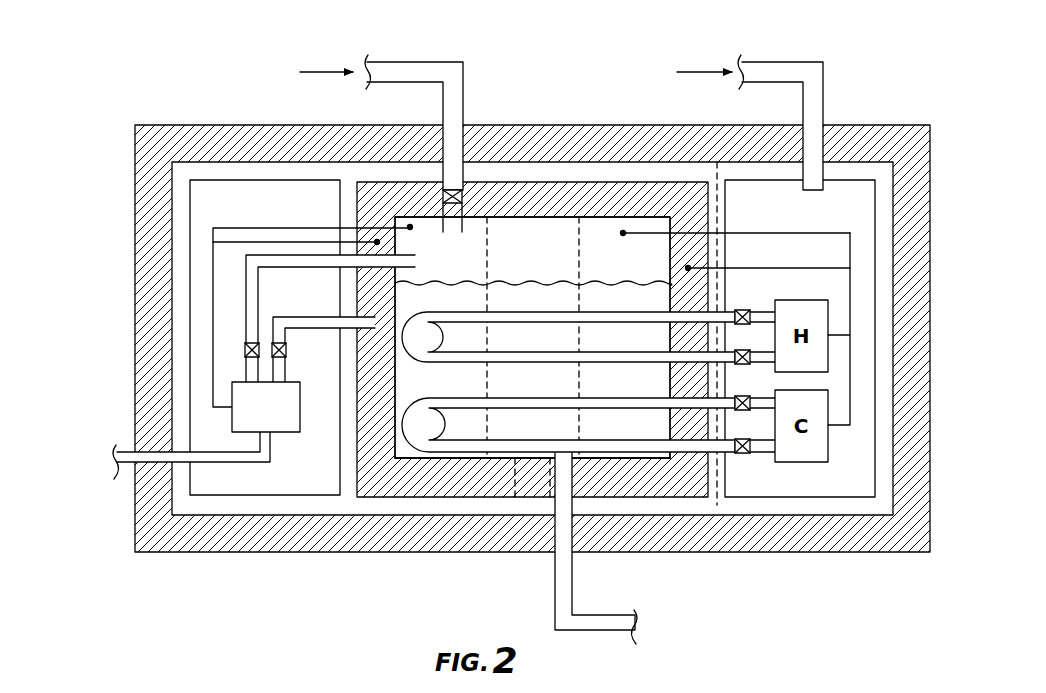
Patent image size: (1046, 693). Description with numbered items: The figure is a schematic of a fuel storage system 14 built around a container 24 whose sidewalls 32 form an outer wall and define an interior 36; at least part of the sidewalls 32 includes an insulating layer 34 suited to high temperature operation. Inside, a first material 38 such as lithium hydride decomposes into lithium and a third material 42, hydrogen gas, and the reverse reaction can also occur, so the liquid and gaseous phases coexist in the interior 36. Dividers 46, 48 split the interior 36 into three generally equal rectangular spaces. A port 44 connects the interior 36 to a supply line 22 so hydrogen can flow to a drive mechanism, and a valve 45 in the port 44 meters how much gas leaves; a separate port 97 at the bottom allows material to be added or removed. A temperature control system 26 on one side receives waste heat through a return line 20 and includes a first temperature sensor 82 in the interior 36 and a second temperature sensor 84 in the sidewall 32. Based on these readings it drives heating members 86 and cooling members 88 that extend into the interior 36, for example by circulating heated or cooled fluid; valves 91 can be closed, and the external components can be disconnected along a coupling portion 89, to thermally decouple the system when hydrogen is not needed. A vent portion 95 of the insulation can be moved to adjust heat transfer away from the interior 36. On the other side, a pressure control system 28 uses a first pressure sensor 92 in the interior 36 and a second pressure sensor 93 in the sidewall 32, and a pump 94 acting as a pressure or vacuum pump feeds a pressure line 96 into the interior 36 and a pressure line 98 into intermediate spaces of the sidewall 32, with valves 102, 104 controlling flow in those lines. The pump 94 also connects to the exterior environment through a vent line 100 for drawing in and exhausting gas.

The fuel storage system 14 is at (867, 68).
The return line 20 is at (765, 72).
The supply line 22 is at (403, 72).
The container 24 is at (533, 187).
The temperature control system 26 is at (853, 180).
The pressure control system 28 is at (255, 180).
The sidewalls 32 is at (600, 183).
The insulating layer 34 is at (652, 200).
The interior 36 is at (638, 455).
The first material 38 is at (408, 452).
The third material 42 is at (533, 337).
The port 44 is at (452, 232).
The valve 45 is at (455, 186).
The divider 46 is at (487, 250).
The divider 48 is at (579, 250).
The first temperature sensor 82 is at (762, 233).
The second temperature sensor 84 is at (762, 268).
The heating member 86 is at (438, 316).
The cooling member 88 is at (443, 403).
The coupling portion 89 is at (715, 505).
The valves 91 is at (742, 308).
The first pressure sensor 92 is at (293, 225).
The second pressure sensor 93 is at (227, 238).
The pump 94 is at (290, 418).
The vent portion 95 is at (538, 477).
The pressure line 96 is at (287, 260).
The port 97 is at (587, 620).
The pressure line 98 is at (305, 322).
The vent line 100 is at (125, 462).
The valve 102 is at (246, 347).
The valve 104 is at (287, 353).